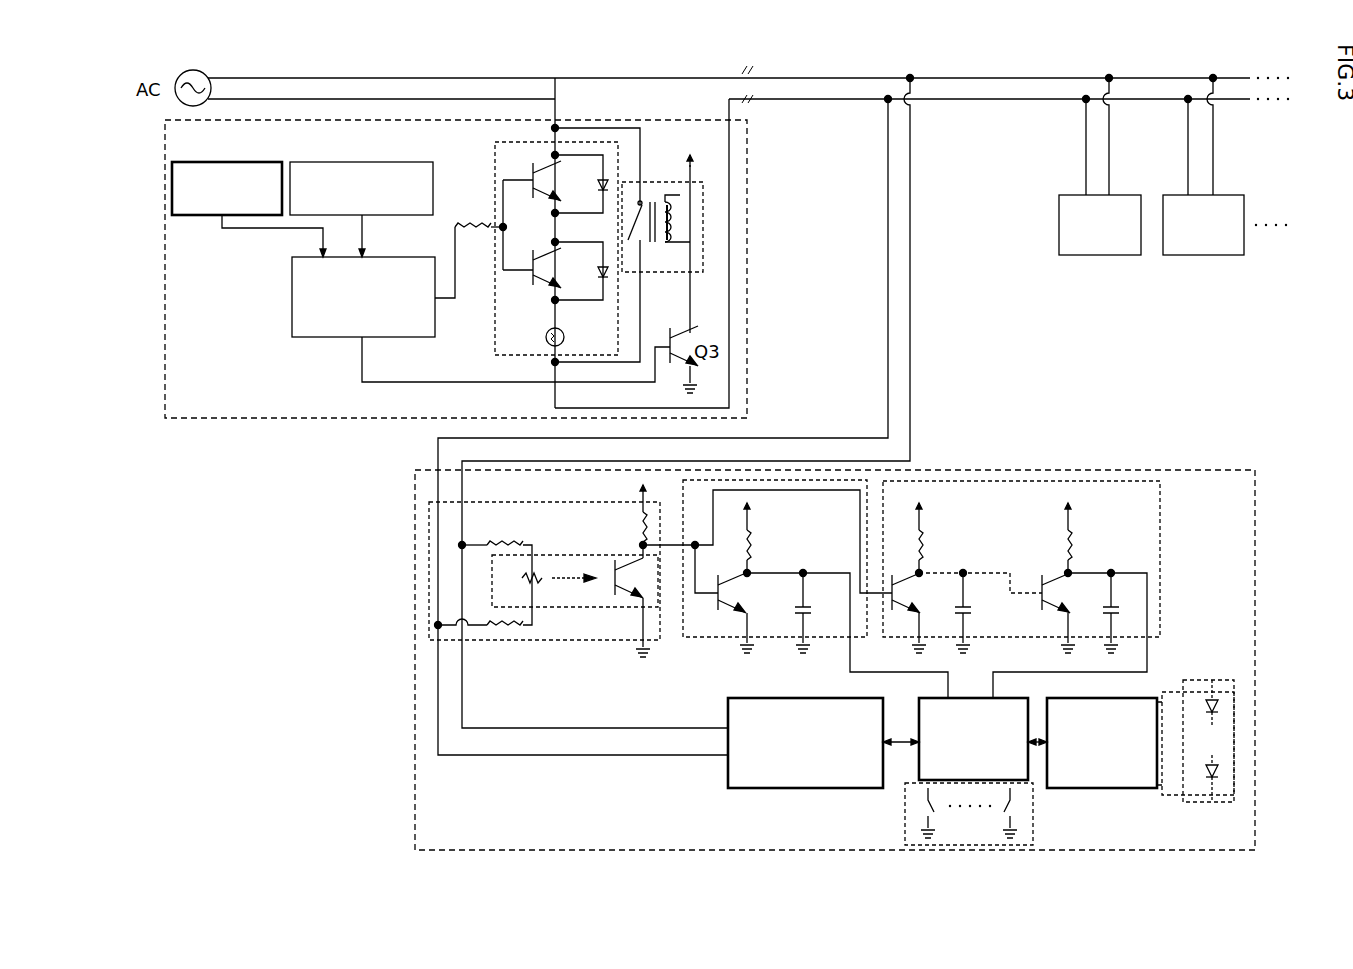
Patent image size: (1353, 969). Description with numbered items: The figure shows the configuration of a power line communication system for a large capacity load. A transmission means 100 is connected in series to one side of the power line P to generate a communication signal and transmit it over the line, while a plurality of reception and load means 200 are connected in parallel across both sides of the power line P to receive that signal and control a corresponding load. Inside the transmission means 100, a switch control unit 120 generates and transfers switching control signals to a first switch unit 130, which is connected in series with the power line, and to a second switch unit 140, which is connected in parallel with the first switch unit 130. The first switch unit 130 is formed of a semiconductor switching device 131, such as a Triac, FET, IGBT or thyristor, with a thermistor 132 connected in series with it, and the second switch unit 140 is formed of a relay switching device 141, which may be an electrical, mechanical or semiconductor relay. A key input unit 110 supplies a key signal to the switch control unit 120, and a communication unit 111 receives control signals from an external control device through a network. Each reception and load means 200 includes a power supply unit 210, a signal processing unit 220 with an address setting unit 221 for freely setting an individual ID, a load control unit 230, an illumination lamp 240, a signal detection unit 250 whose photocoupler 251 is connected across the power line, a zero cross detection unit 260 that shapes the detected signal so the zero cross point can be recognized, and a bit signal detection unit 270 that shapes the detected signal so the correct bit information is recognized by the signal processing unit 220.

The power line P is at (276, 78).
The transmission means 100 is at (202, 420).
The key input unit 110 is at (310, 230).
The communication unit 111 is at (190, 218).
The switch control unit 120 is at (292, 313).
The first switch unit 130 is at (622, 268).
The semiconductor switching device 131 is at (533, 290).
The thermistor 132 is at (566, 330).
The second switch unit 140 is at (703, 218).
The relay switching device 141 is at (655, 197).
The reception and load means 200 is at (1098, 255).
The power supply unit 210 is at (757, 790).
The signal processing unit 220 is at (917, 757).
The address setting unit 221 is at (1033, 808).
The load control unit 230 is at (1112, 792).
The illumination lamp 240 is at (1213, 680).
The signal detection unit 250 is at (427, 515).
The photocoupler 251 is at (490, 573).
The zero cross detection unit 260 is at (840, 480).
The bit signal detection unit 270 is at (985, 470).